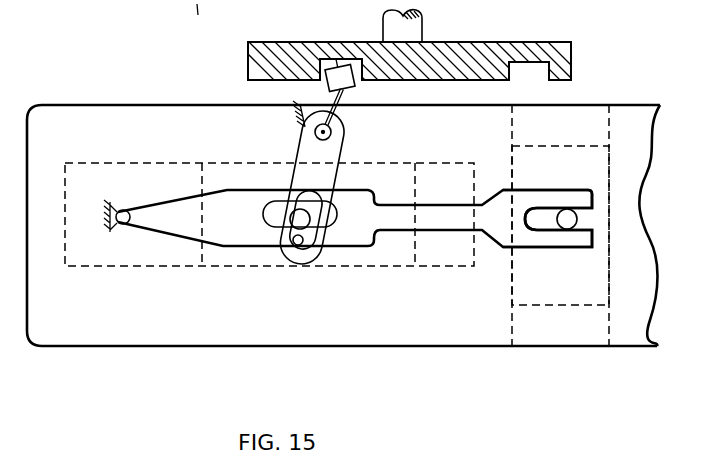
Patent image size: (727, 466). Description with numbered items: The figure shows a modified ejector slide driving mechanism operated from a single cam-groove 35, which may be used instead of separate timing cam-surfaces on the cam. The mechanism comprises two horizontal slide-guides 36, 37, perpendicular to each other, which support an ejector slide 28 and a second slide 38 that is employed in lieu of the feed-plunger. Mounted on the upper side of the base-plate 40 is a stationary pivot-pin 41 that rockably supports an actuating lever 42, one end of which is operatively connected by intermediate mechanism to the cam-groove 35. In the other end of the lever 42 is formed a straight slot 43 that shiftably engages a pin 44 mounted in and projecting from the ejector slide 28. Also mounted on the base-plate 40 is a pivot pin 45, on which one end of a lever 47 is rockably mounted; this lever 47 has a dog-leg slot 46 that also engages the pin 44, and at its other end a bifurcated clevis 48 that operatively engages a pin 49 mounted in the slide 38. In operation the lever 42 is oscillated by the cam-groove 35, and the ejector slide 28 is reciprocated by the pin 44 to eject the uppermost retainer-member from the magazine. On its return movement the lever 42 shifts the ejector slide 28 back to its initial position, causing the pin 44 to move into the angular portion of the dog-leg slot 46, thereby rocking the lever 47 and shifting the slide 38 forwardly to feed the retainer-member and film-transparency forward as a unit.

The ejector slide 28 is at (250, 267).
The cam-groove 35 is at (355, 66).
The slide-guide 36 is at (523, 330).
The slide-guide 37 is at (171, 267).
The second slide 38 is at (590, 293).
The base-plate 40 is at (352, 330).
The stationary pivot-pin 41 is at (327, 130).
The actuating lever 42 is at (323, 160).
The straight slot 43 is at (299, 245).
The pin 44 is at (306, 223).
The pivot pin 45 is at (127, 211).
The dog-leg slot 46 is at (323, 218).
The lever 47 is at (213, 228).
The bifurcated clevis 48 is at (592, 212).
The pin 49 is at (568, 216).